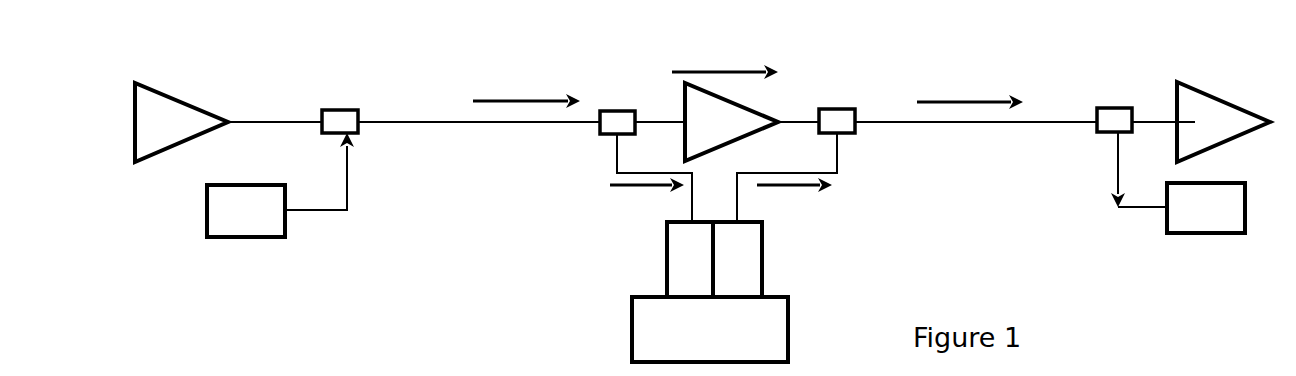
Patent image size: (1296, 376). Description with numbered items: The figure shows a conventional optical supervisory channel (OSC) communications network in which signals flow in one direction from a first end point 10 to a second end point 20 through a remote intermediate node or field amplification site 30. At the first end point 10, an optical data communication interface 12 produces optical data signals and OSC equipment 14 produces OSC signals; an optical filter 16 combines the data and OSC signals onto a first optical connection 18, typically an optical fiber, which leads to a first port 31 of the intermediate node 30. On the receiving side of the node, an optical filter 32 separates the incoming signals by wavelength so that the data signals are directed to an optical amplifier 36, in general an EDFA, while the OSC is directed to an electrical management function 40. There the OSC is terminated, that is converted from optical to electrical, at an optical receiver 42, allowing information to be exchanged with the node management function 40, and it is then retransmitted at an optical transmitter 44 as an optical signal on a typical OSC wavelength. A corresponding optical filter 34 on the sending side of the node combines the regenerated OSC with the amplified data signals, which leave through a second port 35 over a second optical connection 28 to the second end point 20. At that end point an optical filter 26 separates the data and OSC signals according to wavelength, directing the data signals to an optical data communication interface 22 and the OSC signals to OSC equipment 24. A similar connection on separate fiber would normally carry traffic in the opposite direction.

The end point 10 is at (176, 261).
The optical data communication interface 12 is at (181, 122).
The OSC equipment 14 is at (279, 185).
The optical filter 16 is at (293, 108).
The first optical connection 18 is at (473, 102).
The end point 20 is at (1221, 285).
The optical data communication interface 22 is at (1223, 122).
The OSC equipment 24 is at (1224, 208).
The optical filter 26 is at (1131, 144).
The second optical connection 28 is at (983, 103).
The intermediate node 30 is at (646, 47).
The first port 31 is at (595, 122).
The optical filter 32 is at (615, 111).
The optical filter 34 is at (837, 109).
The second port 35 is at (857, 125).
The optical amplifier 36 is at (706, 102).
The management function 40 is at (710, 329).
The optical receiver 42 is at (672, 259).
The optical transmitter 44 is at (754, 259).